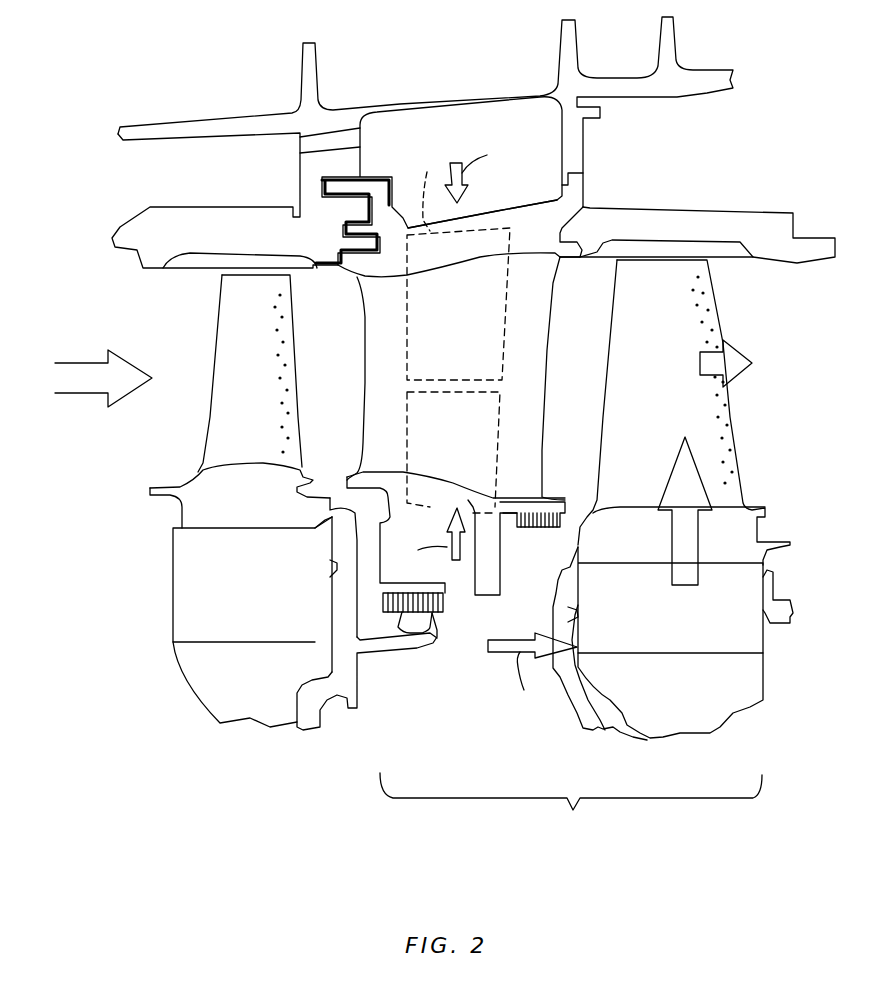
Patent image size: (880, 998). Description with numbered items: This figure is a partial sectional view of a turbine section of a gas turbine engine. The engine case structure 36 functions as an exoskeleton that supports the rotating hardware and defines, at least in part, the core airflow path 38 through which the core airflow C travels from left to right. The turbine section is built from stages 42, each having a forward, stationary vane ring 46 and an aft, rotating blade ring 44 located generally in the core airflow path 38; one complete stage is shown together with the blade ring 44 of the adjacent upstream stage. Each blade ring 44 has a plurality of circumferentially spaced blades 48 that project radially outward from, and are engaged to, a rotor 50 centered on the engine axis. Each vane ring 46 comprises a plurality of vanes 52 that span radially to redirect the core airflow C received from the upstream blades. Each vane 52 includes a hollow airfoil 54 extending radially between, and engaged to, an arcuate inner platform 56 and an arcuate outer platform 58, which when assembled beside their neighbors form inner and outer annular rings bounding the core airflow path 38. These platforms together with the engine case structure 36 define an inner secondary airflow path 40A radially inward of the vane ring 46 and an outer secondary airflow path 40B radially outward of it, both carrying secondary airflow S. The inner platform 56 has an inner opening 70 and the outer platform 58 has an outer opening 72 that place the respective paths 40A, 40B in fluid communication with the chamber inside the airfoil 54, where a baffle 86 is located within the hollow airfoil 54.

The engine case structure 36 is at (680, 66).
The core airflow path 38 is at (172, 348).
The inner secondary airflow path 40A is at (509, 629).
The outer secondary airflow path 40B is at (452, 137).
The stage 42 is at (571, 809).
The blade ring 44 is at (273, 750).
The vane ring 46 is at (447, 667).
The blade 48 is at (253, 397).
The rotor 50 is at (266, 599).
The vane 52 is at (379, 168).
The hollow airfoil 54 is at (367, 321).
The inner platform 56 is at (542, 500).
The outer platform 58 is at (533, 220).
The inner opening 70 is at (473, 537).
The outer opening 72 is at (422, 188).
The baffle 86 is at (505, 358).